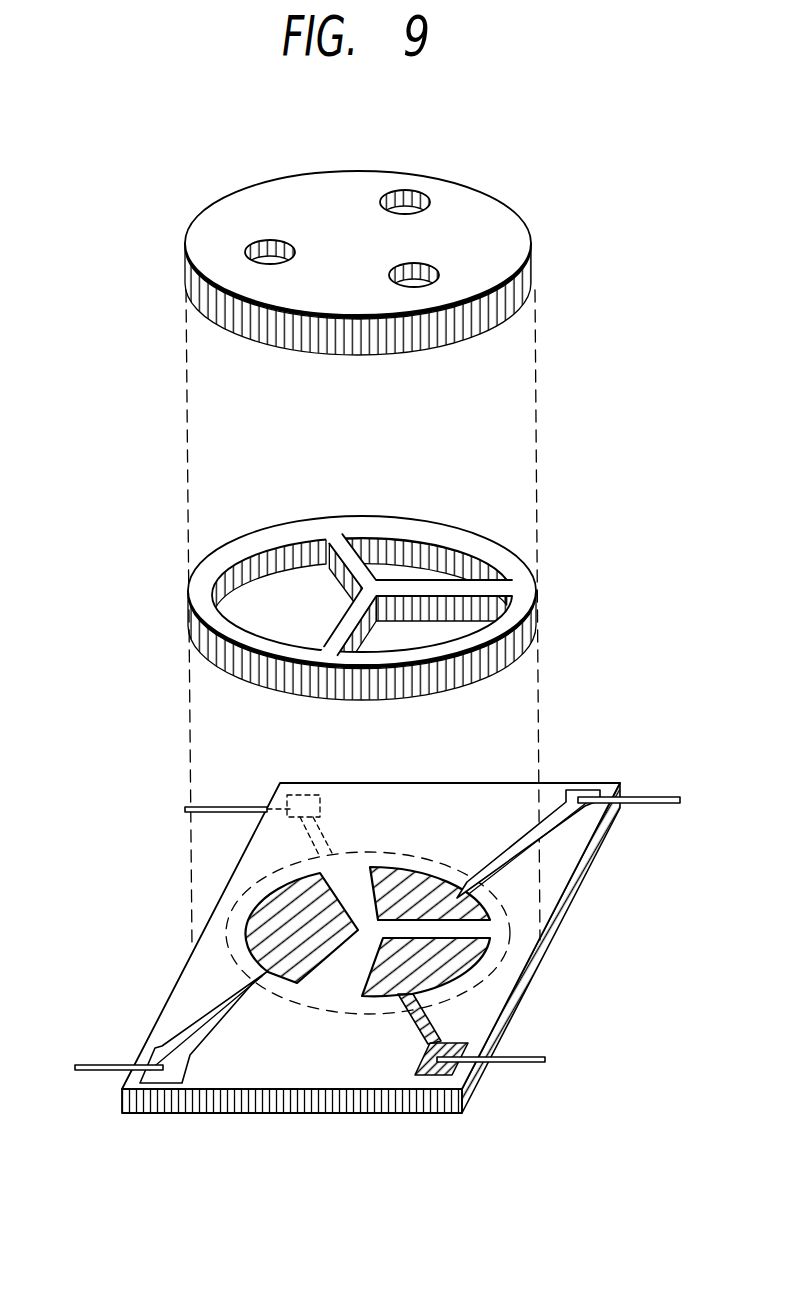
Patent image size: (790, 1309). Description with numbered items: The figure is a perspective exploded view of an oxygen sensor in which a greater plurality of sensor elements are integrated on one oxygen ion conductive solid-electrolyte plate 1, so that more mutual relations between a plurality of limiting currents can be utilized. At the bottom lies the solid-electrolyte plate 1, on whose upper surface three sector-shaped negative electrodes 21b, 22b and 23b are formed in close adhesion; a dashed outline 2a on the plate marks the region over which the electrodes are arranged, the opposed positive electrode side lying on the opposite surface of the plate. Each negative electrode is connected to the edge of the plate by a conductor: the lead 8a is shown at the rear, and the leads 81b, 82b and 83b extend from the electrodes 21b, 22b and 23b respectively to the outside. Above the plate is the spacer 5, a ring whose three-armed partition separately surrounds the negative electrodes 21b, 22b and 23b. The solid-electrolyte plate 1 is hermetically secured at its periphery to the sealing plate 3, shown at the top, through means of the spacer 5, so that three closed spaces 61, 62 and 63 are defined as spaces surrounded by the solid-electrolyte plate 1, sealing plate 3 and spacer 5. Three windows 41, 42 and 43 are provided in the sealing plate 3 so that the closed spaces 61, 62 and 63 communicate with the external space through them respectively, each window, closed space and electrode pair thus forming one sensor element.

The solid-electrolyte plate 1 is at (388, 1113).
The electrode region 2a is at (298, 1012).
The sealing plate 3 is at (528, 273).
The window 41 is at (250, 253).
The window 42 is at (418, 197).
The through hole 43 is at (411, 286).
The spacer 5 is at (218, 652).
The closed space 61 is at (273, 600).
The closed space 62 is at (417, 567).
The spacer opening 63 is at (422, 638).
The negative electrode 21b is at (262, 925).
The negative electrode 22b is at (430, 877).
The electrode 23b is at (465, 958).
The lead terminal 8a is at (186, 809).
The lead terminal 81b is at (78, 1065).
The lead terminal 82b is at (655, 797).
The lead terminal 83b is at (545, 1059).